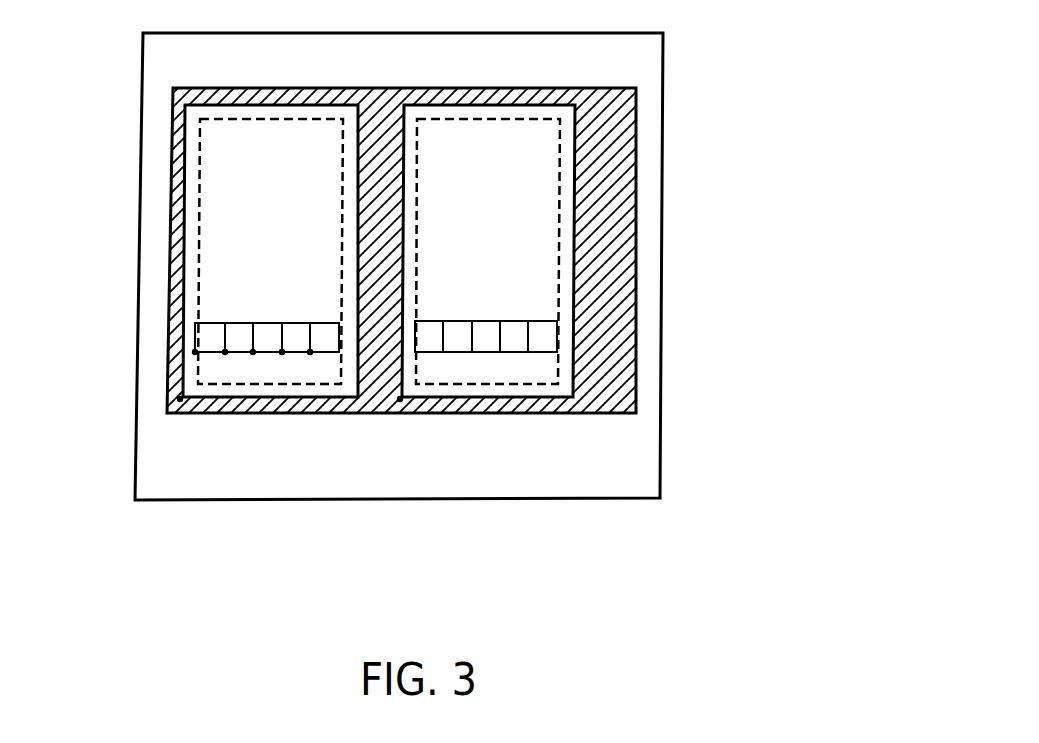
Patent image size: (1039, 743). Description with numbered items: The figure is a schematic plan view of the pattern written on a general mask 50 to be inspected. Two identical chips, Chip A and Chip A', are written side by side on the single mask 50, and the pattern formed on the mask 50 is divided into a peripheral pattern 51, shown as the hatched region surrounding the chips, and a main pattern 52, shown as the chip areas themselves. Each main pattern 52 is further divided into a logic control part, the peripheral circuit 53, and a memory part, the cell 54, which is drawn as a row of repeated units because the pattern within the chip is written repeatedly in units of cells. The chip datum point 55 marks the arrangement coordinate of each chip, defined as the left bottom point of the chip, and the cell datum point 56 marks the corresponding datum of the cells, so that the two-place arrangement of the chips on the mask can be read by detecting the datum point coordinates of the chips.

The mask 50 is at (660, 462).
The peripheral pattern 51 is at (608, 353).
The main pattern 52 is at (543, 182).
The peripheral circuit 53 is at (568, 268).
The cell 54 is at (326, 344).
The chip datum point 55 is at (180, 399).
The cell datum point 56 is at (195, 352).